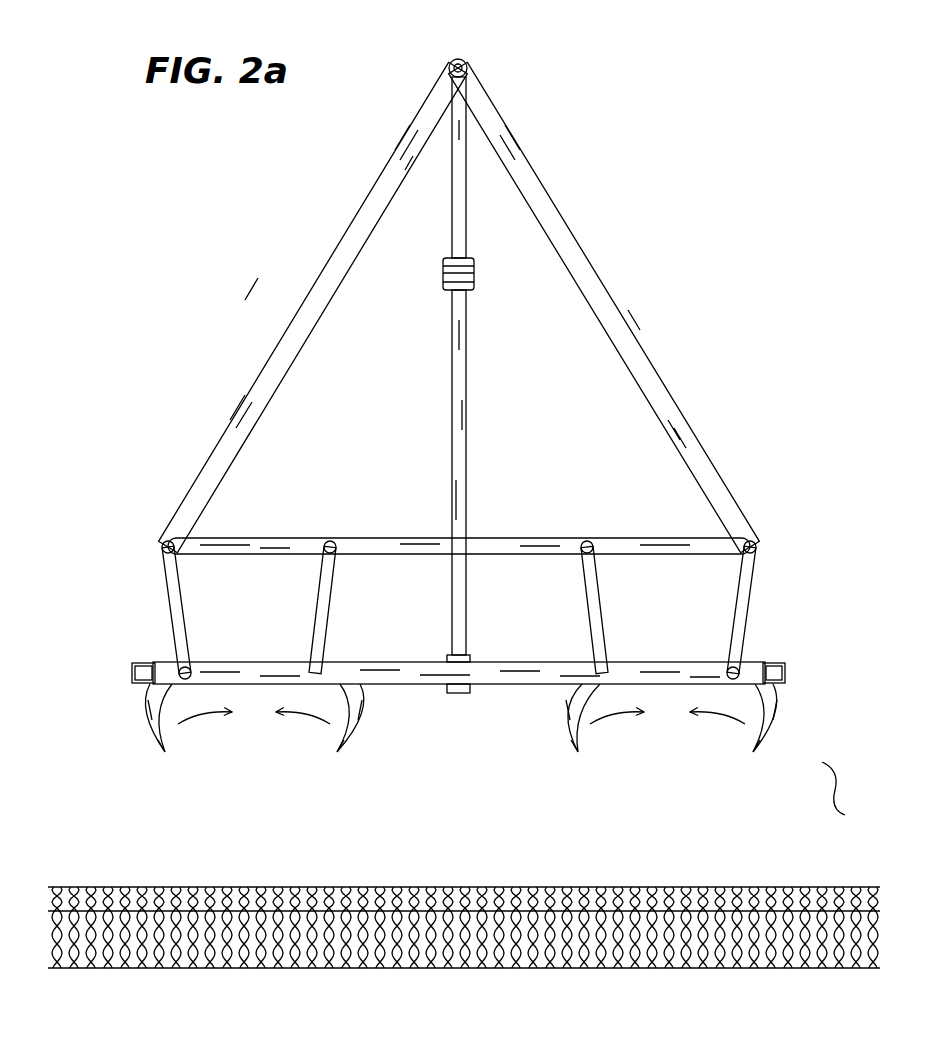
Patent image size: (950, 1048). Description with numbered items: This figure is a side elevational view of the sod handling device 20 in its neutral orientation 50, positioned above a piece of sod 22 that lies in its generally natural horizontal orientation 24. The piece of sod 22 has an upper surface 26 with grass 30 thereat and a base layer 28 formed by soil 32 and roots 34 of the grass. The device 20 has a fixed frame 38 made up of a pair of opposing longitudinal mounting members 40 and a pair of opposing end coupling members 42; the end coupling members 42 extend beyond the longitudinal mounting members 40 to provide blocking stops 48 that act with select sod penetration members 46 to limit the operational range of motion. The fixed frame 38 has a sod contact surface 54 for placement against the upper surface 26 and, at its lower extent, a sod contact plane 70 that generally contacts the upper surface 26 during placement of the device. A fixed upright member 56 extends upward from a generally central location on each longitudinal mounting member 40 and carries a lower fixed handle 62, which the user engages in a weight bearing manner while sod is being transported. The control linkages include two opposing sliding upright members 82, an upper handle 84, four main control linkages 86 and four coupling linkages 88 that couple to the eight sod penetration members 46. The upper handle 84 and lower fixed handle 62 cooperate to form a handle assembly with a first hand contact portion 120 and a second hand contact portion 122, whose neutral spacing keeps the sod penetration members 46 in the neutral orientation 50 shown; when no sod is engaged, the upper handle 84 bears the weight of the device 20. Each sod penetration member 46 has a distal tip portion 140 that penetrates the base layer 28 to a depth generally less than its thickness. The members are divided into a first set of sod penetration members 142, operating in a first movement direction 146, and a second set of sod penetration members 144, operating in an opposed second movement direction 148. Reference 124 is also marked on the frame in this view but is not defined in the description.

The sod handling device 20 is at (676, 100).
The piece of sod 22 is at (285, 888).
The generally natural horizontal orientation 24 is at (150, 888).
The upper surface 26 is at (615, 888).
The base layer 28 is at (400, 968).
The grass 30 is at (390, 888).
The soil 32 is at (590, 968).
The roots 34 is at (718, 968).
The fixed frame 38 is at (240, 662).
The longitudinal mounting member 40 is at (488, 662).
The end coupling member 42 is at (132, 675).
The sod penetration member 46 is at (180, 596).
The blocking stop 48 is at (160, 662).
The neutral orientation 50 is at (691, 194).
The sod contact surface 54 is at (530, 689).
The fixed upright member 56 is at (452, 400).
The lower fixed handle 62 is at (476, 276).
The sod contact plane 70 is at (395, 689).
The sliding upright member 82 is at (452, 187).
The upper handle 84 is at (470, 60).
The main control linkage 86 is at (296, 318).
The coupling linkage 88 is at (300, 538).
The first hand contact portion 120 is at (458, 56).
The second hand contact portion 122 is at (442, 272).
The frame 124 is at (709, 141).
The distal tip portion 140 is at (152, 776).
The first set of sod penetration members 142 is at (146, 752).
The second set of sod penetration members 144 is at (342, 752).
The first movement direction 146 is at (232, 722).
The second movement direction 148 is at (272, 722).